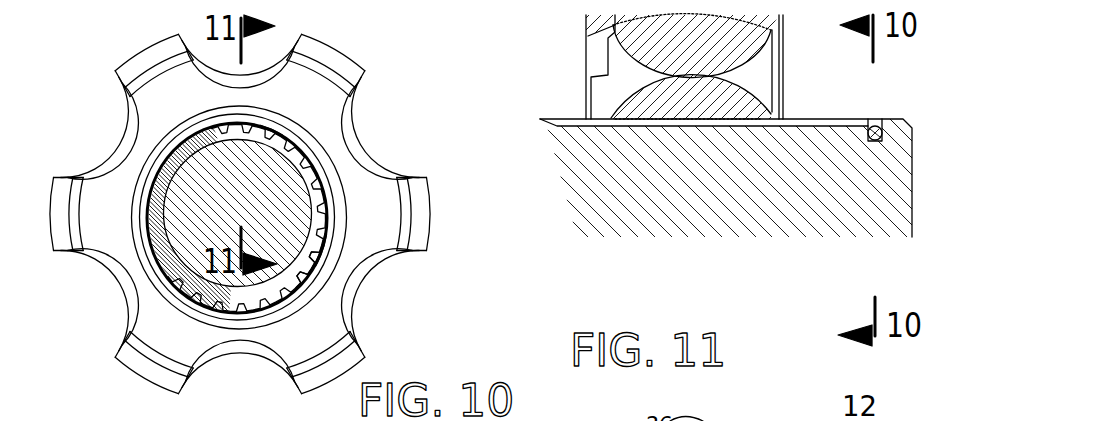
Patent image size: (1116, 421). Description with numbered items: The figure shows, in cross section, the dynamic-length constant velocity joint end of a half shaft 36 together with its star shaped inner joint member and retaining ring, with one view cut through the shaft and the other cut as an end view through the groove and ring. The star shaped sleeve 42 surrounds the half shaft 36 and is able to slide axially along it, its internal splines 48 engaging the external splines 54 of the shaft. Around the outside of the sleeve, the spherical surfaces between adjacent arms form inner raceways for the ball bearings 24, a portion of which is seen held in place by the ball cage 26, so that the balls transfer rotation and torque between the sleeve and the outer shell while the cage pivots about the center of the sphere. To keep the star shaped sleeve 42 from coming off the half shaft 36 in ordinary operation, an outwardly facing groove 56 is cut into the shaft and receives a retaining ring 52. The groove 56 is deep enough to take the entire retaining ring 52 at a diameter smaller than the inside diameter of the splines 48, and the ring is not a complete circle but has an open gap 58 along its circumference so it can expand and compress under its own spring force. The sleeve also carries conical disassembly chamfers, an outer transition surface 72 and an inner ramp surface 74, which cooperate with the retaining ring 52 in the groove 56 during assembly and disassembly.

In FIG. 11, the ball bearings 24 is at (641, 42).
In FIG. 11, the ball cage 26 is at (783, 19).
In FIG. 10, the half shaft 36 is at (190, 230).
In FIG. 11, the half shaft 36 is at (673, 198).
In FIG. 10, the star shaped sleeve 42 is at (147, 106).
In FIG. 11, the star shaped sleeve 42 is at (611, 118).
In FIG. 10, the splines 48 is at (322, 208).
In FIG. 10, the retaining ring 52 is at (275, 127).
In FIG. 11, the retaining ring 52 is at (882, 123).
In FIG. 10, the splines 54 is at (315, 240).
In FIG. 11, the splines 54 is at (822, 124).
In FIG. 11, the groove 56 is at (872, 119).
In FIG. 10, the gap 58 is at (320, 275).
In FIG. 10, the outer disassembly chamfer surface 72 is at (150, 162).
In FIG. 11, the outer disassembly chamfer surface 72 is at (783, 115).
In FIG. 10, the inner disassembly chamfer surface 74 is at (318, 246).